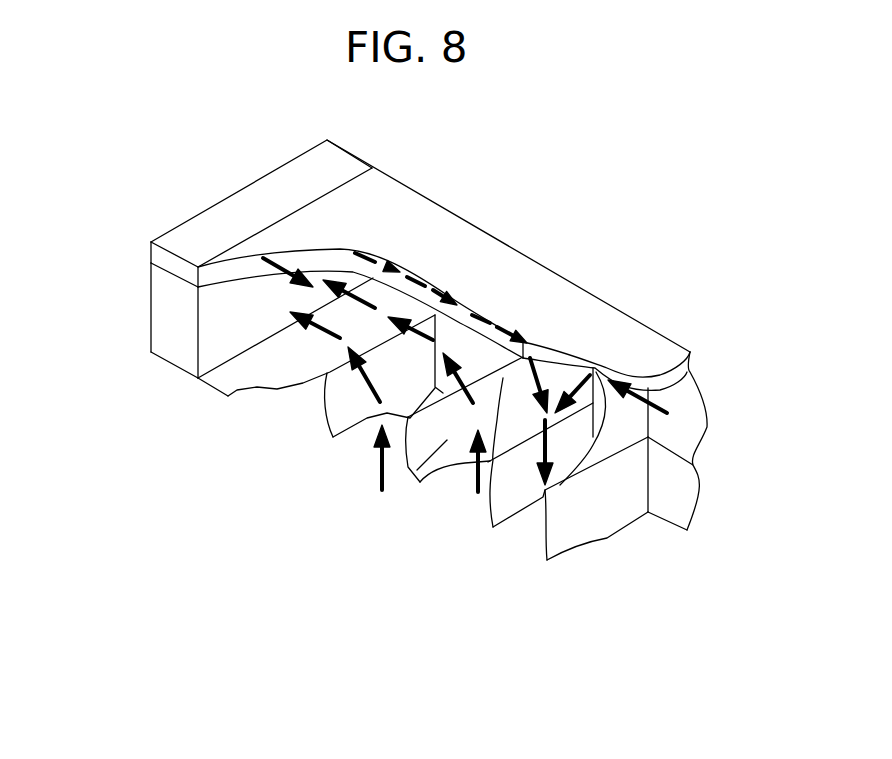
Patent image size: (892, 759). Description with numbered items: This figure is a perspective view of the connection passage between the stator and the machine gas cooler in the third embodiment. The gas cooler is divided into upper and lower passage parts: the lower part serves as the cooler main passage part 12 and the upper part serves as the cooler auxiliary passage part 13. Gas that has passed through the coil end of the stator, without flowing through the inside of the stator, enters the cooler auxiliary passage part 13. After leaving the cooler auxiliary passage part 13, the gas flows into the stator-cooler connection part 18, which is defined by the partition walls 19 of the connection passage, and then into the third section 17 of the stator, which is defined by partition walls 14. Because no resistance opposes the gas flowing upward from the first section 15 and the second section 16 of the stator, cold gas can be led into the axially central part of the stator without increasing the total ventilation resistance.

The cooler main passage part 12 is at (167, 317).
The cooler auxiliary passage part 13 is at (337, 162).
The partition walls 14 is at (353, 400).
The first section 15 is at (392, 420).
The second section 16 is at (467, 473).
The third section 17 is at (533, 515).
The stator-cooler connection part 18 is at (463, 312).
The partition walls of the connection passage 19 is at (533, 360).